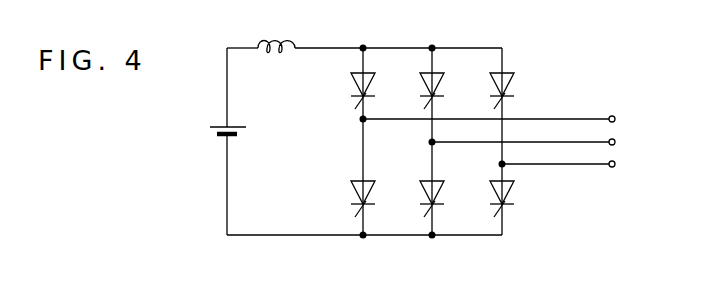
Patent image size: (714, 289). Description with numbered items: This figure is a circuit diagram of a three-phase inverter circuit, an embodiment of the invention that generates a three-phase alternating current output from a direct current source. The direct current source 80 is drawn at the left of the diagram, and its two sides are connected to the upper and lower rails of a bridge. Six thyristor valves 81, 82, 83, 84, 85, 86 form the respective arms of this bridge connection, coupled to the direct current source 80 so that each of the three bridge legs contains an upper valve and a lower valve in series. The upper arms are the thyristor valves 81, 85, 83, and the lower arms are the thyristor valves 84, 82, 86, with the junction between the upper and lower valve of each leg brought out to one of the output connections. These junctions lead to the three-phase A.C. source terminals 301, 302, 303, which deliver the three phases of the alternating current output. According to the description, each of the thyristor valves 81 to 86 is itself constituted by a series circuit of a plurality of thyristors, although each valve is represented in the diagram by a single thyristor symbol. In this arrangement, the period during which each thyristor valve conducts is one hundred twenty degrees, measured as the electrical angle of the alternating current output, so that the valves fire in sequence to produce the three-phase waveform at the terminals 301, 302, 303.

The battery 80 is at (208, 131).
The thyristor valve 81 is at (353, 92).
The thyristor valve 82 is at (421, 203).
The thyristor valve 83 is at (489, 100).
The thyristor valve 84 is at (352, 201).
The thyristor valve 85 is at (421, 98).
The thyristor valve 86 is at (490, 172).
The three-phase A.C. source terminal 301 is at (615, 117).
The three-phase A.C. source terminal 302 is at (615, 143).
The three-phase A.C. source terminal 303 is at (615, 166).